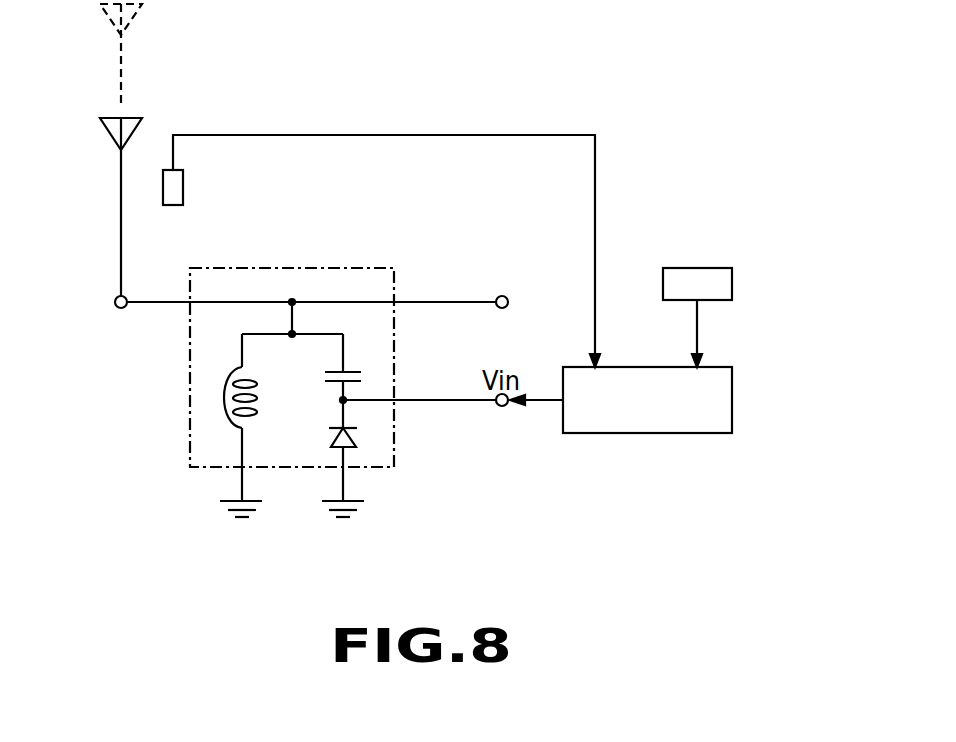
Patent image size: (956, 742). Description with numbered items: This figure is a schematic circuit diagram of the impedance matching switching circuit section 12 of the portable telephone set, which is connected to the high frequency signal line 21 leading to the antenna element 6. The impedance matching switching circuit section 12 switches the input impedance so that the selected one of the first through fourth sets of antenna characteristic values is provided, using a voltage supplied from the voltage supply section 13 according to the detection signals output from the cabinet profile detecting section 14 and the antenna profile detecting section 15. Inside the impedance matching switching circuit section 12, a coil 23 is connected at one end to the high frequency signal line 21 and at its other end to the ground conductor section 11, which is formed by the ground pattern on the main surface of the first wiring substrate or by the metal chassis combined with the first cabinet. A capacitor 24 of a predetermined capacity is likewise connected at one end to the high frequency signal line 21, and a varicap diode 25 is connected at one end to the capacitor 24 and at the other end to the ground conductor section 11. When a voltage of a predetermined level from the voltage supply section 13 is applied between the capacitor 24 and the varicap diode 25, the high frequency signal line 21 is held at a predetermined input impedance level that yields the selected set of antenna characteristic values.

The antenna element 6 is at (121, 190).
The ground conductor section 11 is at (335, 513).
The impedance matching switching circuit section 12 is at (313, 268).
The voltage supply section 13 is at (645, 433).
The cabinet profile detecting section 14 is at (697, 268).
The antenna profile detecting section 15 is at (183, 183).
The high frequency signal line 21 is at (445, 302).
The coil 23 is at (225, 394).
The capacitor 24 is at (351, 372).
The varicap diode 25 is at (348, 440).